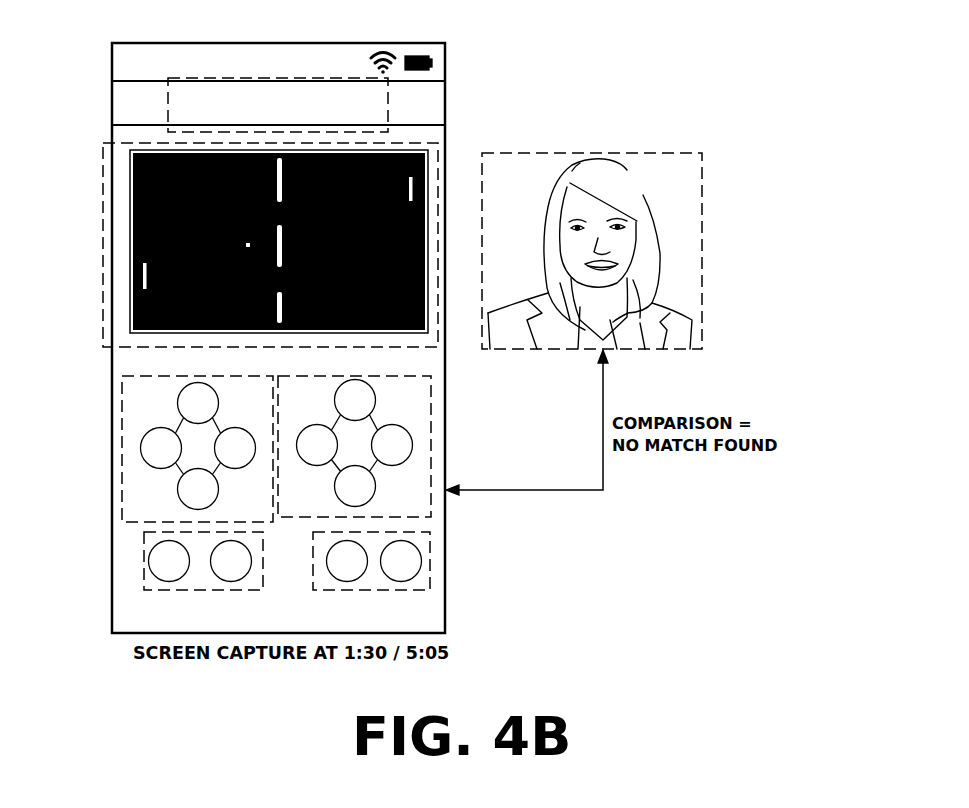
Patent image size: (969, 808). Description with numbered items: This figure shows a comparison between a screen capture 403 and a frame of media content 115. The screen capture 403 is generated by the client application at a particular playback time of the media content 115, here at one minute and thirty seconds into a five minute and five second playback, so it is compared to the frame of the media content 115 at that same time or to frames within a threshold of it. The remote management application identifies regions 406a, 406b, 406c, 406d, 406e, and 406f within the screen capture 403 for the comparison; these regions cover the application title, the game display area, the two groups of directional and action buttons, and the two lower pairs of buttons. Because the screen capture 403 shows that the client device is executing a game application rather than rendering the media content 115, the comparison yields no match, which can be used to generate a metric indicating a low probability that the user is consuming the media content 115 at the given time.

The screen capture 403 is at (133, 43).
The region 406a is at (168, 100).
The region 406b is at (103, 226).
The region 406c is at (122, 430).
The region 406d is at (144, 560).
The region 406e is at (431, 428).
The region 406f is at (430, 563).
The media content 115 is at (678, 185).